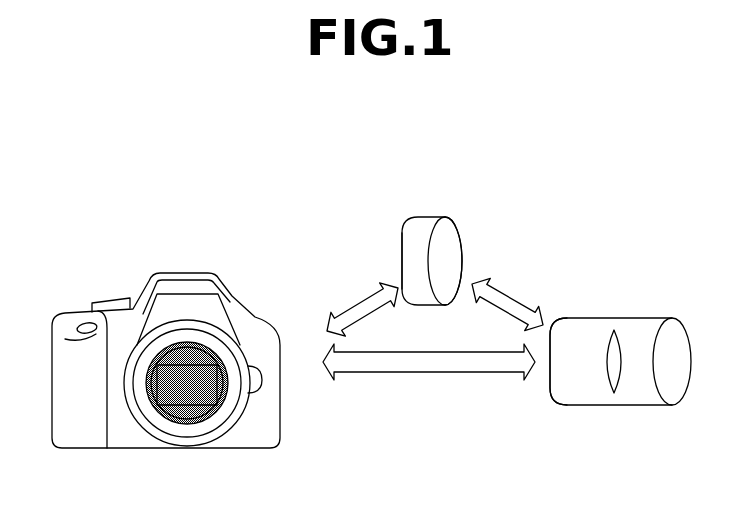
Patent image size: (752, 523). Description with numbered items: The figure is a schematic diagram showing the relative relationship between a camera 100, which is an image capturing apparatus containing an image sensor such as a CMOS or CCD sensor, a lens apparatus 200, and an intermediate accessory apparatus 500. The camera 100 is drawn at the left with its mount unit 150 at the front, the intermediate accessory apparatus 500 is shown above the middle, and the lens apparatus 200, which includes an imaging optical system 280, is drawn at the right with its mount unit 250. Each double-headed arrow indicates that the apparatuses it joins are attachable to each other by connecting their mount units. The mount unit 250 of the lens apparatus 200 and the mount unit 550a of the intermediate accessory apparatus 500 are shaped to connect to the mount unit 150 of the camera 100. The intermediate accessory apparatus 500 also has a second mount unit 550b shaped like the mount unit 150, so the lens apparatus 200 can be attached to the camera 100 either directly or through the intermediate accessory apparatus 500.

The camera 100 is at (188, 273).
The mount unit 150 is at (187, 436).
The intermediate accessory apparatus 500 is at (435, 217).
The mount unit 550a is at (402, 250).
The mount unit 550b is at (450, 260).
The lens apparatus 200 is at (655, 318).
The mount unit 250 is at (553, 382).
The imaging optical system 280 is at (605, 348).